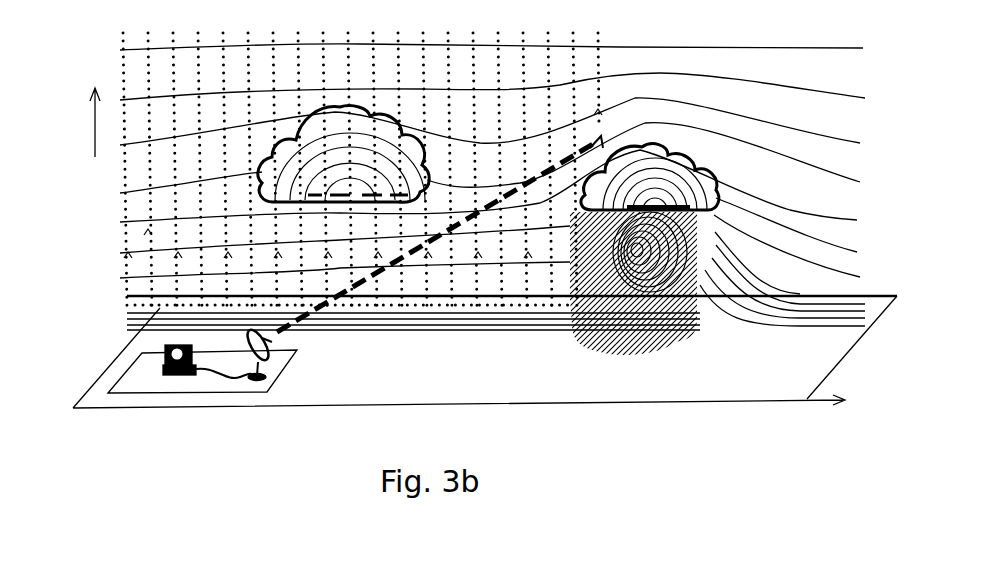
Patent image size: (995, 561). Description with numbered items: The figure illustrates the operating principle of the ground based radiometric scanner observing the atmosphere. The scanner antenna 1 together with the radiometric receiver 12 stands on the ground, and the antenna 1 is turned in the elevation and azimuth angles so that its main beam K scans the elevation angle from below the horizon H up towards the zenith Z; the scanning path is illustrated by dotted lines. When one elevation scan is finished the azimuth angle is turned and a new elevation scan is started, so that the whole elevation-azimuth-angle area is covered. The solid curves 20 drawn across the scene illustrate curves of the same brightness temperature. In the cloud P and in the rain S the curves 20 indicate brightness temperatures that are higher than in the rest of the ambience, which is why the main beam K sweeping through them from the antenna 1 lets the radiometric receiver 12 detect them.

The solid curves 20 is at (790, 48).
The cloud P is at (372, 118).
The rain S is at (675, 313).
The horizon H is at (862, 290).
The zenith Z is at (95, 105).
The main beam K is at (408, 262).
The antenna 1 is at (277, 347).
The radiometric receiver 12 is at (208, 361).